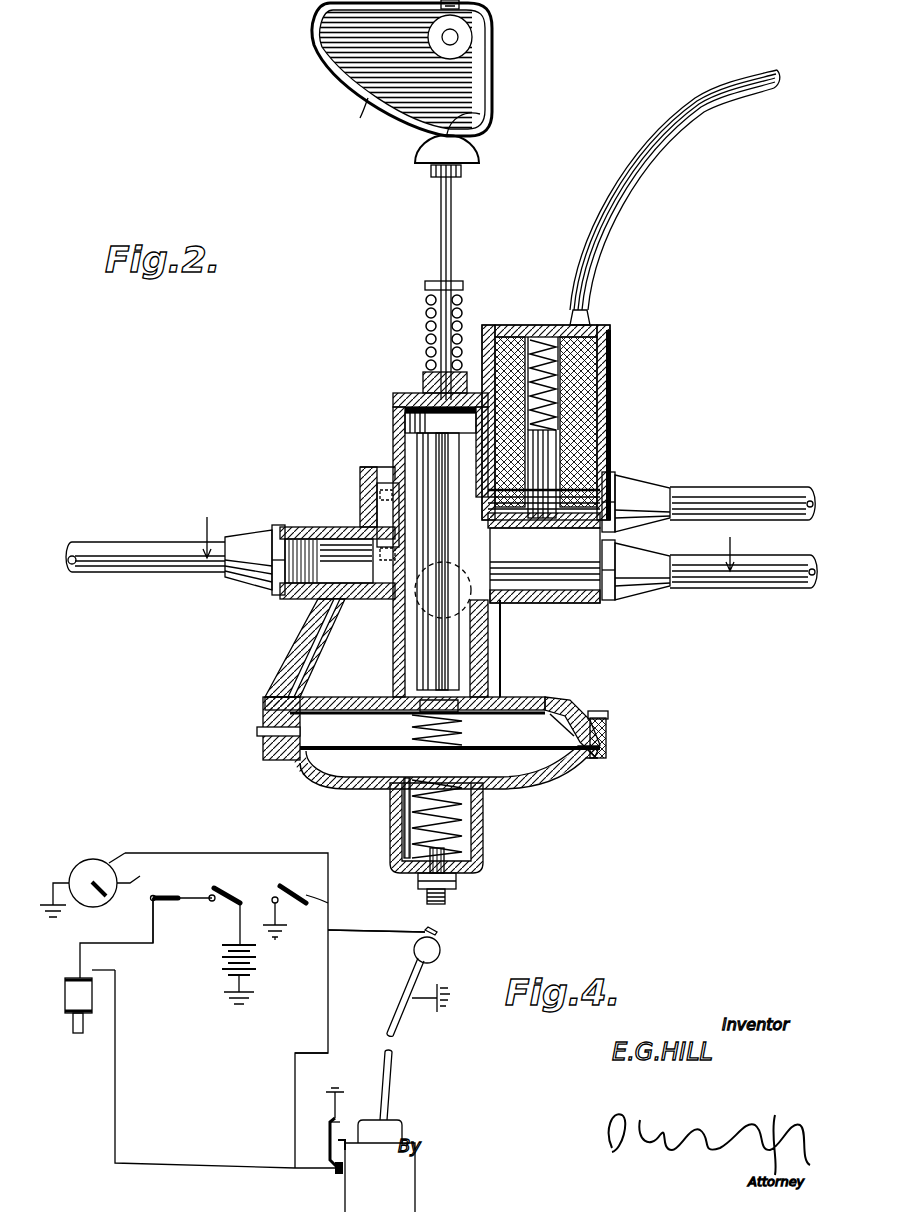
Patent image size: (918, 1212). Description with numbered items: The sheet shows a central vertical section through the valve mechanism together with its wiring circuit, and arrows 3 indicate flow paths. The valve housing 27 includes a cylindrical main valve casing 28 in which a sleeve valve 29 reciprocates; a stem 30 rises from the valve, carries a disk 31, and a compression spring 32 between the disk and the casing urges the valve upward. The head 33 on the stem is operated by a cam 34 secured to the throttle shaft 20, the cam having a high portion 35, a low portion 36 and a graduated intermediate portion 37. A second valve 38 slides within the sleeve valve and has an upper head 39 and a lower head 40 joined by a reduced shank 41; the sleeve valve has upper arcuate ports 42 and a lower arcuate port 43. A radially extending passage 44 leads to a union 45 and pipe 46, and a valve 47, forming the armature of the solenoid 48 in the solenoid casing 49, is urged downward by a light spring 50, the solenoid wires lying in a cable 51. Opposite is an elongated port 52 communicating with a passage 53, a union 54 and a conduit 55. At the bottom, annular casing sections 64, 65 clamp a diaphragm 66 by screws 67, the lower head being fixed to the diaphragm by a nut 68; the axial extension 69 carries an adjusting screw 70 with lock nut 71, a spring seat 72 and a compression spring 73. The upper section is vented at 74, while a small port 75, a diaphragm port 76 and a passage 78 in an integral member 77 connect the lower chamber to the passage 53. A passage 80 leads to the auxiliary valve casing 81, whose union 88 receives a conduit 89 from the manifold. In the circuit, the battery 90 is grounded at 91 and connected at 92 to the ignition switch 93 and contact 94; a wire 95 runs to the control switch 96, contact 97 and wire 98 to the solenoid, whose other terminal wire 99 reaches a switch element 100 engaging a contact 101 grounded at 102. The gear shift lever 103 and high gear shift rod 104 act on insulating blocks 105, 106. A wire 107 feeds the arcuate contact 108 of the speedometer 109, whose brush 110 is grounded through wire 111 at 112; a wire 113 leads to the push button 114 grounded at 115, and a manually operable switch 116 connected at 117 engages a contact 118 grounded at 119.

In FIG. 2, the flow direction arrow 3 is at (468, 532).
In FIG. 2, the shaft 20 is at (458, 37).
In FIG. 2, the valve housing 27 is at (516, 690).
In FIG. 2, the main valve casing 28 is at (490, 632).
In FIG. 2, the sleeve valve 29 is at (393, 420).
In FIG. 2, the stem 30 is at (452, 250).
In FIG. 2, the disk 31 is at (463, 284).
In FIG. 2, the compression spring 32 is at (425, 322).
In FIG. 2, the head 33 is at (470, 160).
In FIG. 2, the cam 34 is at (492, 72).
In FIG. 2, the high portion 35 is at (316, 24).
In FIG. 2, the low portion 36 is at (480, 114).
In FIG. 2, the graduated intermediate portion 37 is at (360, 118).
In FIG. 2, the second valve 38 is at (417, 620).
In FIG. 2, the upper head 39 is at (360, 487).
In FIG. 2, the lower head 40 is at (417, 652).
In FIG. 2, the reduced shank 41 is at (405, 518).
In FIG. 2, the upper arcuate ports 42 is at (412, 470).
In FIG. 2, the lower arcuate port 43 is at (404, 552).
In FIG. 2, the radially extending passage 44 is at (505, 495).
In FIG. 2, the union 45 is at (643, 482).
In FIG. 2, the pipe 46 is at (743, 490).
In FIG. 2, the valve 47 is at (538, 507).
In FIG. 4, the valve 47 is at (75, 1033).
In FIG. 2, the solenoid 48 is at (610, 405).
In FIG. 4, the solenoid 48 is at (65, 1002).
In FIG. 2, the solenoid casing 49 is at (610, 368).
In FIG. 2, the light spring 50 is at (535, 345).
In FIG. 2, the cable 51 is at (596, 283).
In FIG. 2, the opposite port 52 is at (395, 498).
In FIG. 2, the passage 53 is at (334, 539).
In FIG. 2, the union 54 is at (252, 535).
In FIG. 2, the conduit 55 is at (148, 545).
In FIG. 2, the upper casing section 64 is at (570, 704).
In FIG. 2, the lower casing section 65 is at (556, 786).
In FIG. 2, the diaphragm 66 is at (535, 748).
In FIG. 2, the screws 67 is at (608, 716).
In FIG. 2, the nut 68 is at (410, 722).
In FIG. 2, the axial extension 69 is at (483, 825).
In FIG. 2, the adjusting screw 70 is at (445, 900).
In FIG. 2, the lock nut 71 is at (456, 882).
In FIG. 2, the spring seat 72 is at (402, 832).
In FIG. 2, the compression spring 73 is at (402, 800).
In FIG. 2, the atmospheric vent 74 is at (552, 692).
In FIG. 2, the small port 75 is at (286, 760).
In FIG. 2, the diaphragm port 76 is at (257, 732).
In FIG. 2, the integral member 77 is at (298, 646).
In FIG. 2, the passage 78 is at (290, 665).
In FIG. 2, the passage 80 is at (443, 590).
In FIG. 2, the auxiliary valve casing 81 is at (575, 603).
In FIG. 2, the union 88 is at (645, 600).
In FIG. 2, the conduit 89 is at (706, 590).
In FIG. 4, the battery 90 is at (222, 957).
In FIG. 4, the ground 91 is at (230, 994).
In FIG. 4, the battery connection 92 is at (240, 930).
In FIG. 4, the ignition switch 93 is at (233, 880).
In FIG. 4, the contact 94 is at (212, 894).
In FIG. 4, the wire 95 is at (195, 900).
In FIG. 4, the control switch 96 is at (170, 885).
In FIG. 4, the contact 97 is at (152, 902).
In FIG. 4, the wire 98 is at (153, 943).
In FIG. 4, the wire 99 is at (115, 1063).
In FIG. 4, the switch element 100 is at (330, 1130).
In FIG. 4, the contact 101 is at (342, 1118).
In FIG. 4, the ground 102 is at (350, 1080).
In FIG. 4, the gear shift lever 103 is at (396, 1065).
In FIG. 4, the high gear shift rod 104 is at (352, 1152).
In FIG. 4, the insulating block 105 is at (348, 1178).
In FIG. 4, the insulating block 106 is at (335, 1150).
In FIG. 4, the wire 107 is at (295, 1083).
In FIG. 4, the arcuate contact 108 is at (141, 875).
In FIG. 4, the speedometer 109 is at (82, 853).
In FIG. 4, the brush 110 is at (115, 861).
In FIG. 4, the wire 111 is at (55, 881).
In FIG. 4, the ground 112 is at (38, 925).
In FIG. 4, the wire 113 is at (373, 931).
In FIG. 4, the push button 114 is at (440, 945).
In FIG. 4, the ground 115 is at (447, 990).
In FIG. 4, the manually operable switch 116 is at (295, 925).
In FIG. 4, the connection 117 is at (305, 879).
In FIG. 4, the contact 118 is at (274, 896).
In FIG. 4, the ground 119 is at (276, 945).